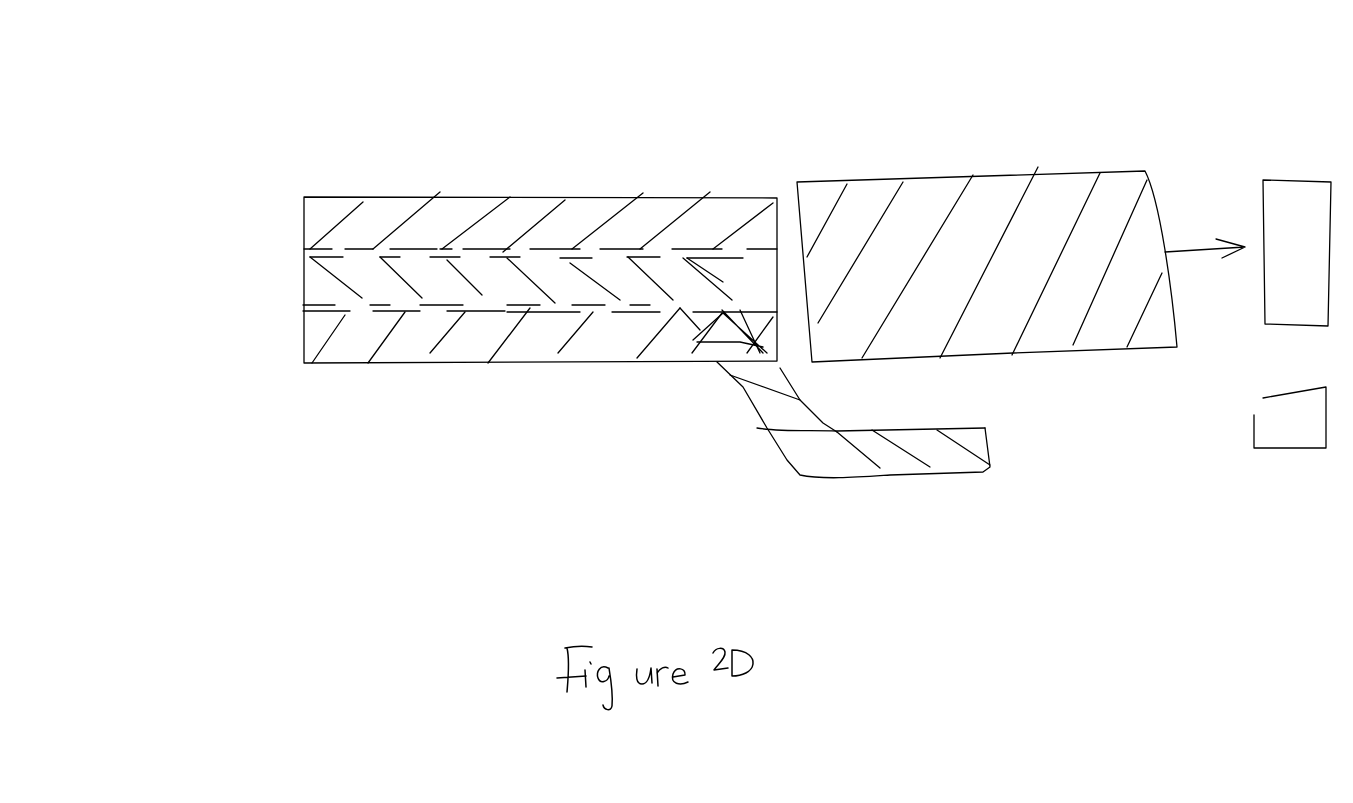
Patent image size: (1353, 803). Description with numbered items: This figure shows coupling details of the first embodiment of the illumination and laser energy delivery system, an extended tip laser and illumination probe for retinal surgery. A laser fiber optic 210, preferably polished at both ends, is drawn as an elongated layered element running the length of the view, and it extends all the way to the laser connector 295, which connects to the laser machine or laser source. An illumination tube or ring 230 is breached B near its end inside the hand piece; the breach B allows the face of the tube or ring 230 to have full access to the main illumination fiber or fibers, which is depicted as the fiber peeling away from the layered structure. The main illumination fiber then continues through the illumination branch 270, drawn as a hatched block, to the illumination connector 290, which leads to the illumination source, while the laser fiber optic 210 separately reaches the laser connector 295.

The laser fiber optic 210 is at (114, 350).
The illumination tube or ring 230 is at (174, 430).
The breach B is at (693, 402).
The illumination branch 270 is at (1074, 95).
The illumination connector 290 is at (1326, 50).
The laser connector 295 is at (1311, 508).